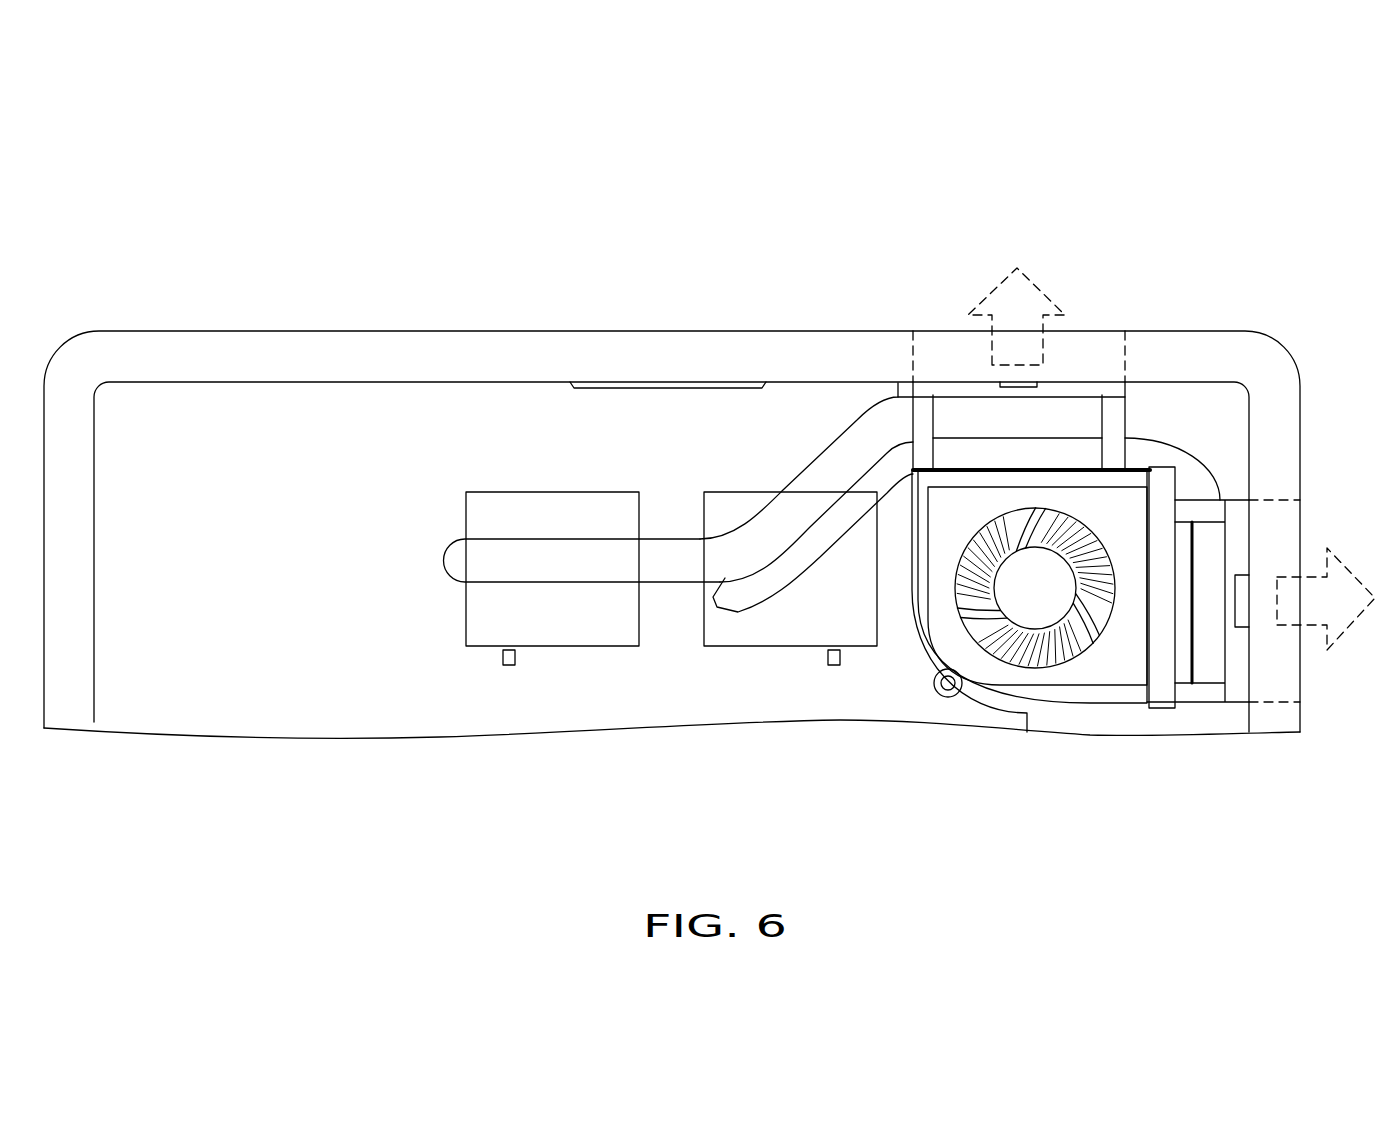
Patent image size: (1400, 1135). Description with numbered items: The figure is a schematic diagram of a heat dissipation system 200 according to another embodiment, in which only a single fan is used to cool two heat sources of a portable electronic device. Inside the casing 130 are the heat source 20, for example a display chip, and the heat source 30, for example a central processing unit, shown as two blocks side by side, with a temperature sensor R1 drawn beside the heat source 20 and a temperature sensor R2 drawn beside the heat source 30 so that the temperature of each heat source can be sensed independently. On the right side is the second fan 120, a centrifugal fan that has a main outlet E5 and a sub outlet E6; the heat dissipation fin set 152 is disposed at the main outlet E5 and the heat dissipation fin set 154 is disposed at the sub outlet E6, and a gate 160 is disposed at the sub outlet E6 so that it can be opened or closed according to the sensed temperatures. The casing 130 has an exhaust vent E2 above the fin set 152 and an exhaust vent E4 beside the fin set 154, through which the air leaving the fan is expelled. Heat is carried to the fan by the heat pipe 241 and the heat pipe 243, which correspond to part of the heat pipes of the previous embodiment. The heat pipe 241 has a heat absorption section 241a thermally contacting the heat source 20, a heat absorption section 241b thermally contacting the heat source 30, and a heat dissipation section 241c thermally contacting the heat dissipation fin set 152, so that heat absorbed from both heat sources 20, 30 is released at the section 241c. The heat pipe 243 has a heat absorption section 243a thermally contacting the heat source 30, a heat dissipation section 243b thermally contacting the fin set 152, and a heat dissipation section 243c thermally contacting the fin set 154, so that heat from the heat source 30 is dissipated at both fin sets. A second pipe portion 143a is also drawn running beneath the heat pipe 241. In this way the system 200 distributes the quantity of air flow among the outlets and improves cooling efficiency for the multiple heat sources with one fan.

The heat dissipation system 200 is at (1392, 848).
The casing 130 is at (1275, 343).
The heat source 20 is at (575, 630).
The heat source 30 is at (744, 630).
The temperature sensor R1 is at (509, 666).
The temperature sensor R2 is at (834, 666).
The heat pipe 241 is at (137, 63).
The heat absorption section 241a is at (540, 525).
The heat absorption section 241b is at (755, 500).
The heat dissipation section 241c is at (1043, 421).
The second heat pipe 143a is at (796, 596).
The heat dissipation fin set 152 is at (1107, 390).
The heat pipe 243 is at (262, 63).
The heat absorption section 243a is at (286, 79).
The heat dissipation section 243b is at (1081, 461).
The heat dissipation section 243c is at (1198, 656).
The second fan 120 is at (943, 618).
The gate 160 is at (1153, 483).
The heat dissipation fin set 154 is at (1238, 667).
The exhaust vent E2 is at (958, 358).
The exhaust vent E4 is at (1273, 688).
The main outlet E5 is at (978, 457).
The sub outlet E6 is at (1164, 665).